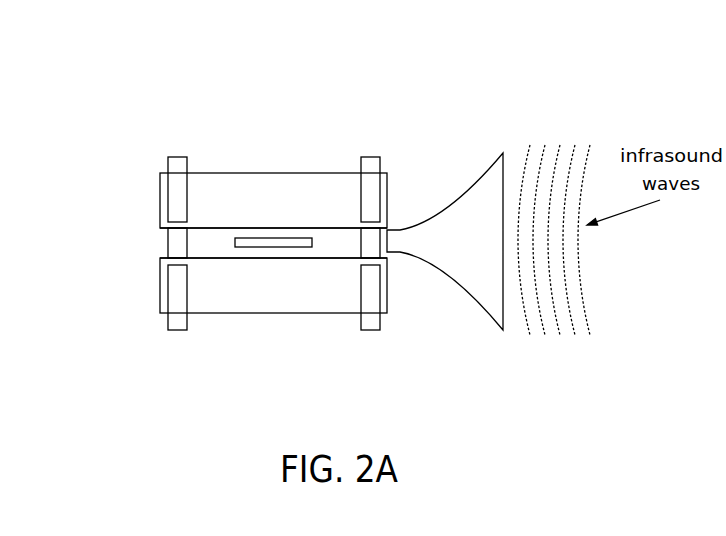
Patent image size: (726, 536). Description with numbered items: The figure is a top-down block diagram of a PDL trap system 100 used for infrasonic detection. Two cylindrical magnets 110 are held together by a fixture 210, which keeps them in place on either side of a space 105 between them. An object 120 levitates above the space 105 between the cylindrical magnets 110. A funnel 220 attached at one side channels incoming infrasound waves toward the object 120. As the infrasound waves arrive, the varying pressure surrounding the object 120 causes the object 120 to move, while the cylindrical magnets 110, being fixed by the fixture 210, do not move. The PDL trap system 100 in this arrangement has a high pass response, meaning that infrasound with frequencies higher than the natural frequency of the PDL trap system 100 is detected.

The PDL trap system 100 is at (341, 88).
The space 105 is at (332, 242).
The cylindrical magnets 110 is at (203, 273).
The object 120 is at (250, 245).
The fixture 210 is at (170, 163).
The funnel 220 is at (487, 200).